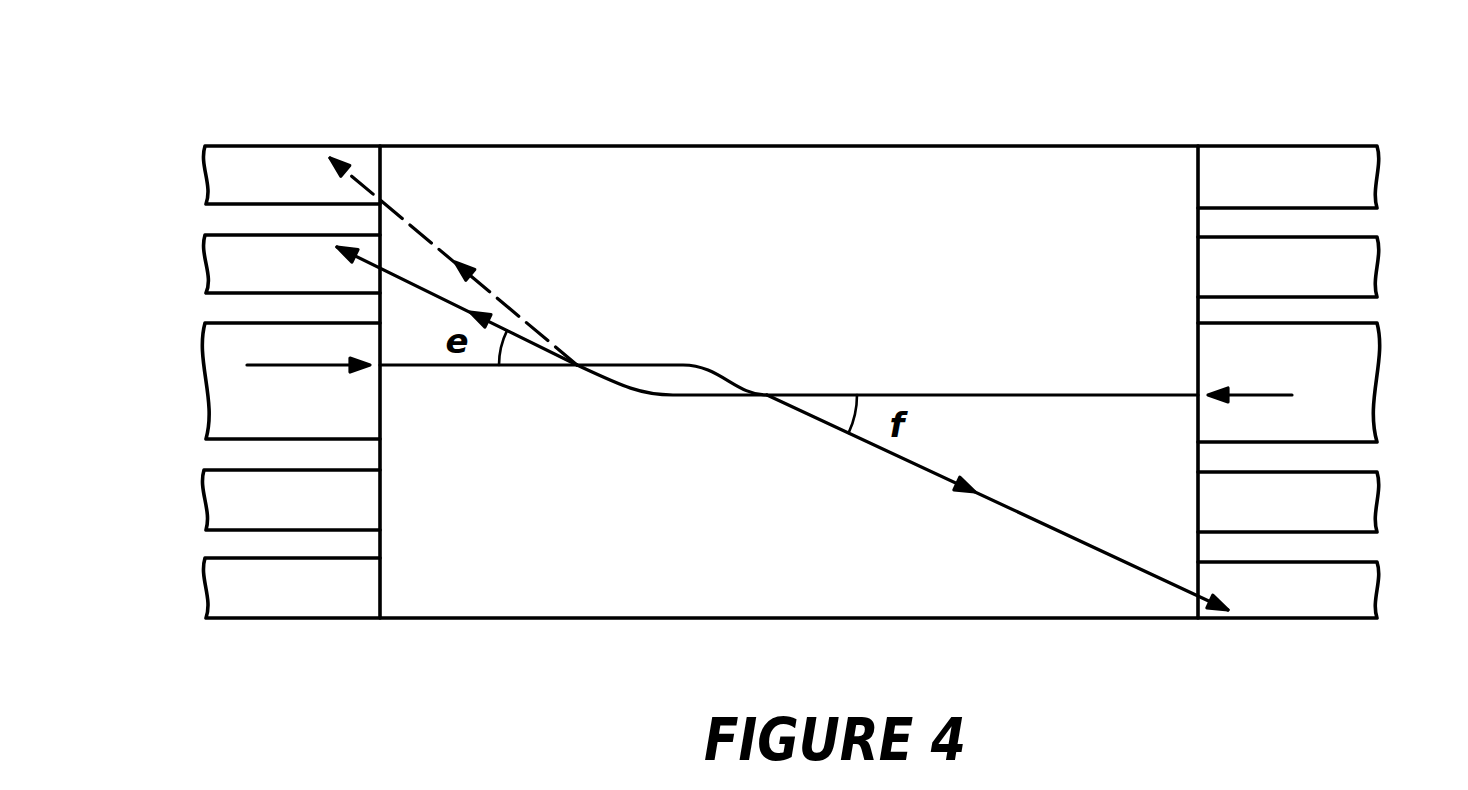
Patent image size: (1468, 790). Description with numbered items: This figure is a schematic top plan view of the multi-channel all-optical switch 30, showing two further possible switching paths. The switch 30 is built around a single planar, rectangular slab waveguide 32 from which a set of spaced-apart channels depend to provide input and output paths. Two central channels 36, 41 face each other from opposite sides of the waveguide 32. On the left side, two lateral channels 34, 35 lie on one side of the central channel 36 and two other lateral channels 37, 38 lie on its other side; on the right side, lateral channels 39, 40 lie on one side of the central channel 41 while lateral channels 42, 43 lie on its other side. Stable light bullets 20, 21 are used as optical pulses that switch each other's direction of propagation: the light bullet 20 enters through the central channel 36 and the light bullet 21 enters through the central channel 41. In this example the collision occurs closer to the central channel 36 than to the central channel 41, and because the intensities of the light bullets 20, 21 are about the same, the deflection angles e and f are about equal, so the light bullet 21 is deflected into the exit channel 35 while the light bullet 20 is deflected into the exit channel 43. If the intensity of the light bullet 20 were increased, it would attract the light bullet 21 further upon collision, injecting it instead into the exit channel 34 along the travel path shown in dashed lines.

The light bullet 20 is at (436, 367).
The light bullet 21 is at (456, 302).
The switch 30 is at (858, 59).
The waveguide 32 is at (585, 163).
The lateral channel 34 is at (218, 180).
The lateral channel 35 is at (218, 265).
The central channel 36 is at (222, 382).
The lateral channel 37 is at (222, 513).
The lateral channel 38 is at (217, 603).
The lateral channel 39 is at (1347, 183).
The lateral channel 40 is at (1347, 255).
The central channel 41 is at (1347, 375).
The lateral channel 42 is at (1347, 508).
The lateral channel 43 is at (1343, 595).